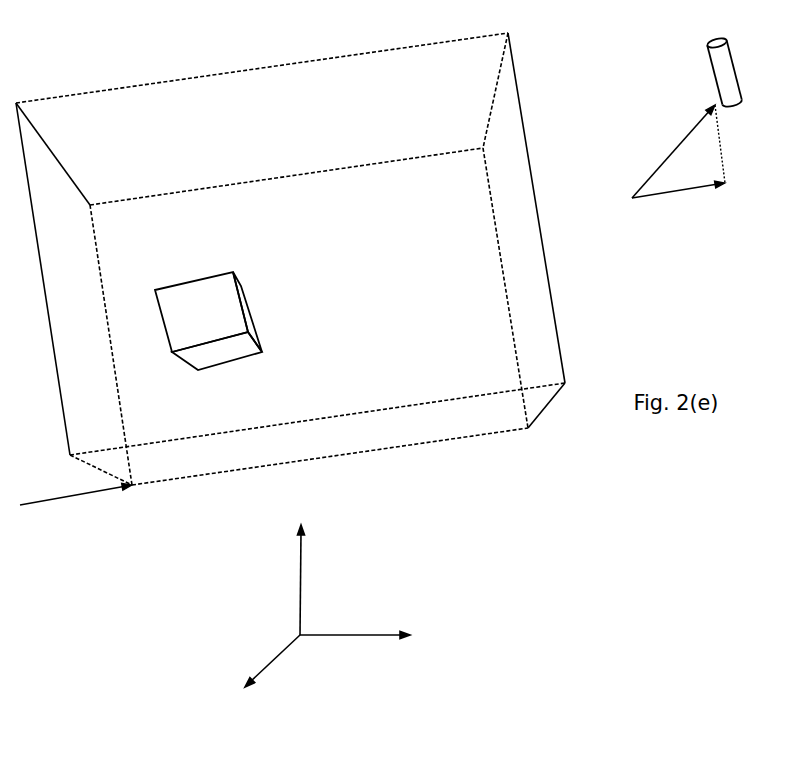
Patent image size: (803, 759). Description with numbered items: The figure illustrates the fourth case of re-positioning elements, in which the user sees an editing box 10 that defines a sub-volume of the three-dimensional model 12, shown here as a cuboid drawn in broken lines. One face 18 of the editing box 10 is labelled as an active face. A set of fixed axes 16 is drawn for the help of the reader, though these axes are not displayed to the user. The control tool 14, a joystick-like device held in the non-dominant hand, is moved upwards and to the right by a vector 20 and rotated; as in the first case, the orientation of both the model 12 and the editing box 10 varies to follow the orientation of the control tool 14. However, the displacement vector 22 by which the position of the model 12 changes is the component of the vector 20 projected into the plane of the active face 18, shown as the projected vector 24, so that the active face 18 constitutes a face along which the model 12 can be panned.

The editing box 10 is at (242, 302).
The model 12 is at (537, 207).
The control tool 14 is at (710, 75).
The fixed axes 16 is at (389, 664).
The active face 18 is at (247, 350).
The vector 20 is at (673, 151).
The displacement vector 22 is at (76, 507).
The projected vector 24 is at (678, 165).